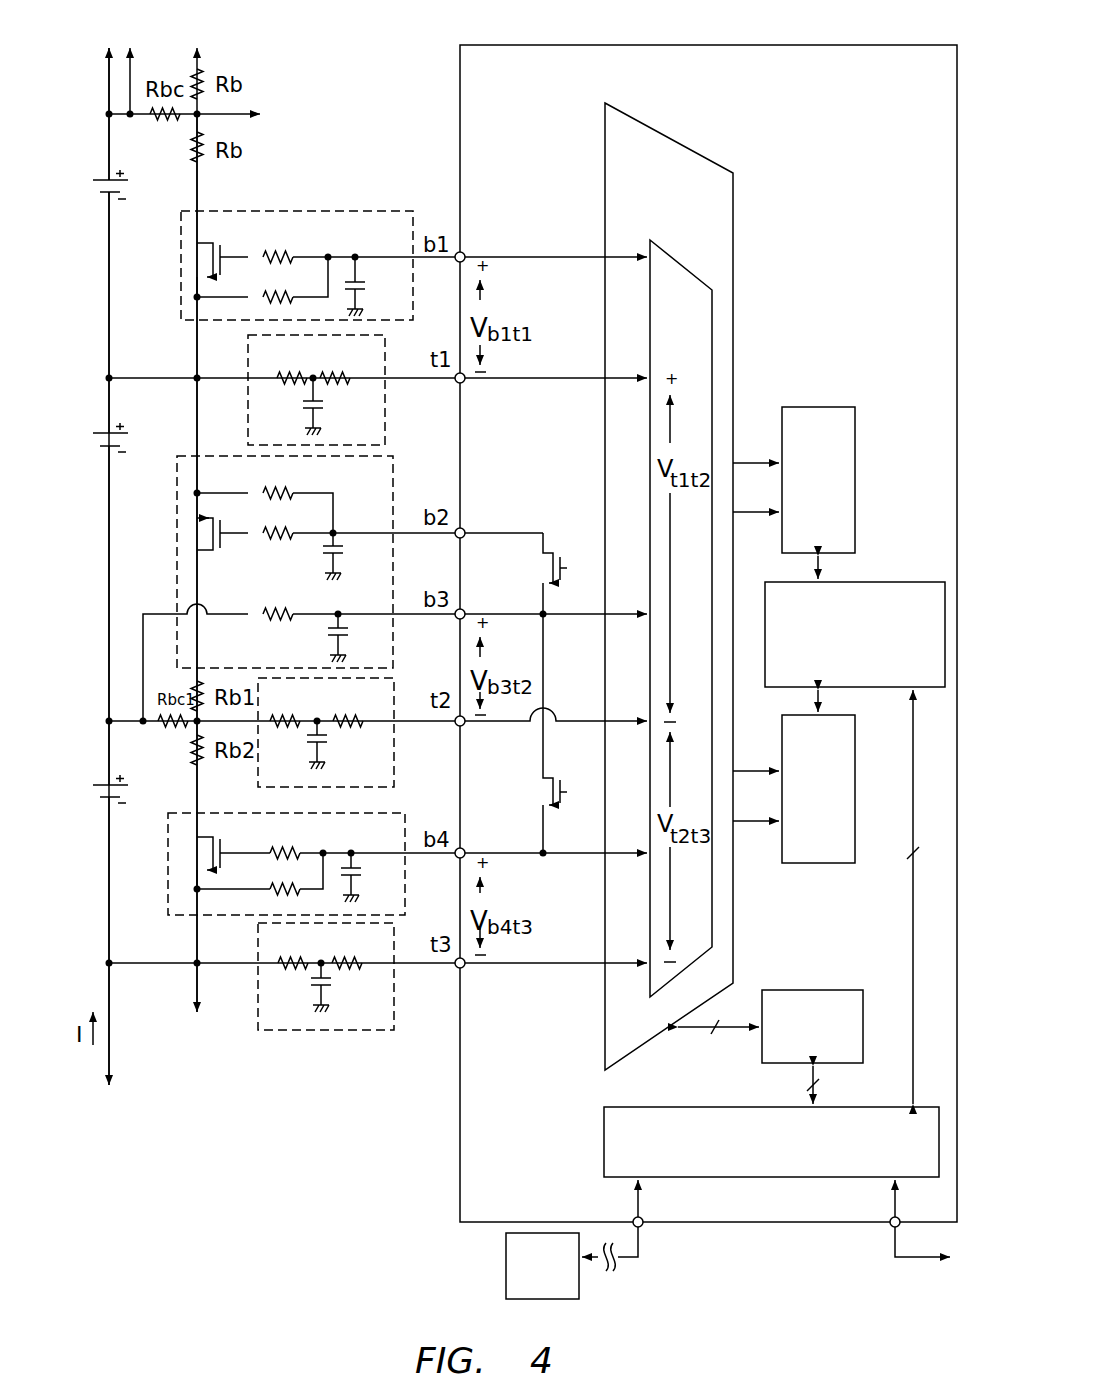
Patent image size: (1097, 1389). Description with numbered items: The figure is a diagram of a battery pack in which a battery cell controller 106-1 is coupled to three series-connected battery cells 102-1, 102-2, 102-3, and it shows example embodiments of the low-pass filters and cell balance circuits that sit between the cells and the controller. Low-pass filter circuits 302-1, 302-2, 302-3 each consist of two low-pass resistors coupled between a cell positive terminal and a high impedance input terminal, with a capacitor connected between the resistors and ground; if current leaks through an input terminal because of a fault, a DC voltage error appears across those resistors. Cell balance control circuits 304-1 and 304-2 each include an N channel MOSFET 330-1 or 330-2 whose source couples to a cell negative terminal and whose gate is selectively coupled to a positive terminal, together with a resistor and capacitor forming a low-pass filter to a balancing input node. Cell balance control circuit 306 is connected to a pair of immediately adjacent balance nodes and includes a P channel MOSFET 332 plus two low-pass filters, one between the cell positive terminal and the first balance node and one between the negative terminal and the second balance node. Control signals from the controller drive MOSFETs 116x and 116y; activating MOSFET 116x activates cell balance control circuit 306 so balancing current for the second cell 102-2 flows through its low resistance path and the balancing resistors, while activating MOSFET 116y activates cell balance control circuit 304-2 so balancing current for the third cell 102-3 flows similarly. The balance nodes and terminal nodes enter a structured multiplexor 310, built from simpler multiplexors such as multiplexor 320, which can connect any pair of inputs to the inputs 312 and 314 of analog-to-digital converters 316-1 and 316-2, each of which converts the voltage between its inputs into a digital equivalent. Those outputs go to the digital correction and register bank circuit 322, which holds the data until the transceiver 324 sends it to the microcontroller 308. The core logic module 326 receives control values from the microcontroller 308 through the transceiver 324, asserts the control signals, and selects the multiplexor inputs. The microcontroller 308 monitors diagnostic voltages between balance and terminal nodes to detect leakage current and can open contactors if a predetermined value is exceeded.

The battery cell controller (BCC) 106-1 is at (642, 45).
The battery cell 102-1 is at (95, 179).
The battery cell 102-2 is at (95, 433).
The battery cell 102-3 is at (95, 785).
The cell balance control circuit (CBC) 304-1 is at (320, 246).
The cell balance control circuit (CBC) 304-2 is at (316, 841).
The N channel MOSFET 330-1 is at (207, 243).
The N channel MOSFET 330-2 is at (208, 838).
The low-pass filter circuit (LPF) 302-1 is at (416, 413).
The low-pass filter circuit (LPF) 302-2 is at (394, 684).
The low-pass filter circuit (LPF) 302-3 is at (393, 1022).
The cell balance control circuit (CBC) 306 is at (301, 579).
The P channel MOSFET 332 is at (213, 552).
The MOSFET 116x is at (556, 553).
The MOSFET 116y is at (550, 808).
The structured multiplexor 310 is at (690, 143).
The multiplexor 320 is at (672, 255).
The analog-to-digital converter (ADC) 316-1 is at (805, 407).
The analog-to-digital converter (ADC) 316-2 is at (856, 775).
The ADC input 312 is at (784, 461).
The ADC input 314 is at (785, 512).
The digital correction and register bank circuit 322 is at (897, 582).
The core logic module 326 is at (790, 990).
The transceiver 324 is at (688, 1107).
The MCU 308 is at (505, 1262).